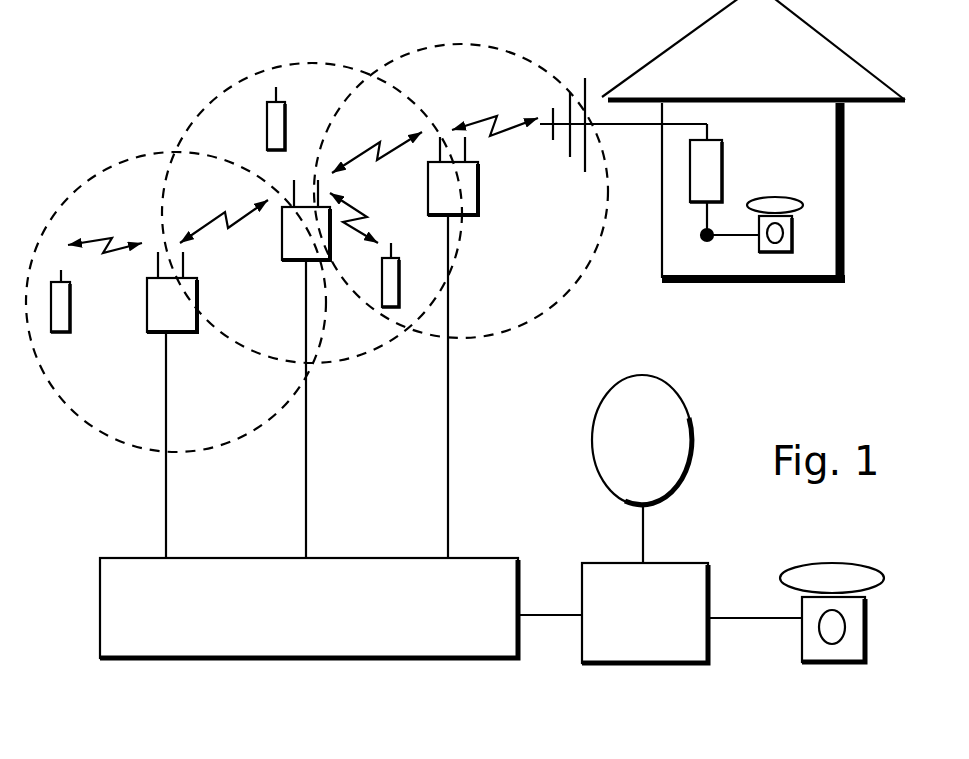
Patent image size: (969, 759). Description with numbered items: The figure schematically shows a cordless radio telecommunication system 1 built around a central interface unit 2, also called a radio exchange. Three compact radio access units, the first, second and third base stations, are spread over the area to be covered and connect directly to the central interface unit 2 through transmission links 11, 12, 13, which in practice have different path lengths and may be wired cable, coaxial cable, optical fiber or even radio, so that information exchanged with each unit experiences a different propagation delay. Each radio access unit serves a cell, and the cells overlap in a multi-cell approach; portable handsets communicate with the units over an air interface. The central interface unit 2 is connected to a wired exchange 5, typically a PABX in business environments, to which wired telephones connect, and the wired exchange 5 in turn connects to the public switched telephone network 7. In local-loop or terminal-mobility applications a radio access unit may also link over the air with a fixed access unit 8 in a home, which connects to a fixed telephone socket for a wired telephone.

The cordless radio telecommunication system 1 is at (526, 406).
The central interface unit 2 is at (507, 576).
The wired exchange 5 is at (706, 577).
The public switched telephone network 7 is at (672, 407).
The fixed access unit 8 is at (722, 150).
The transmission link 11 is at (167, 491).
The transmission link 12 is at (307, 491).
The transmission link 13 is at (449, 491).